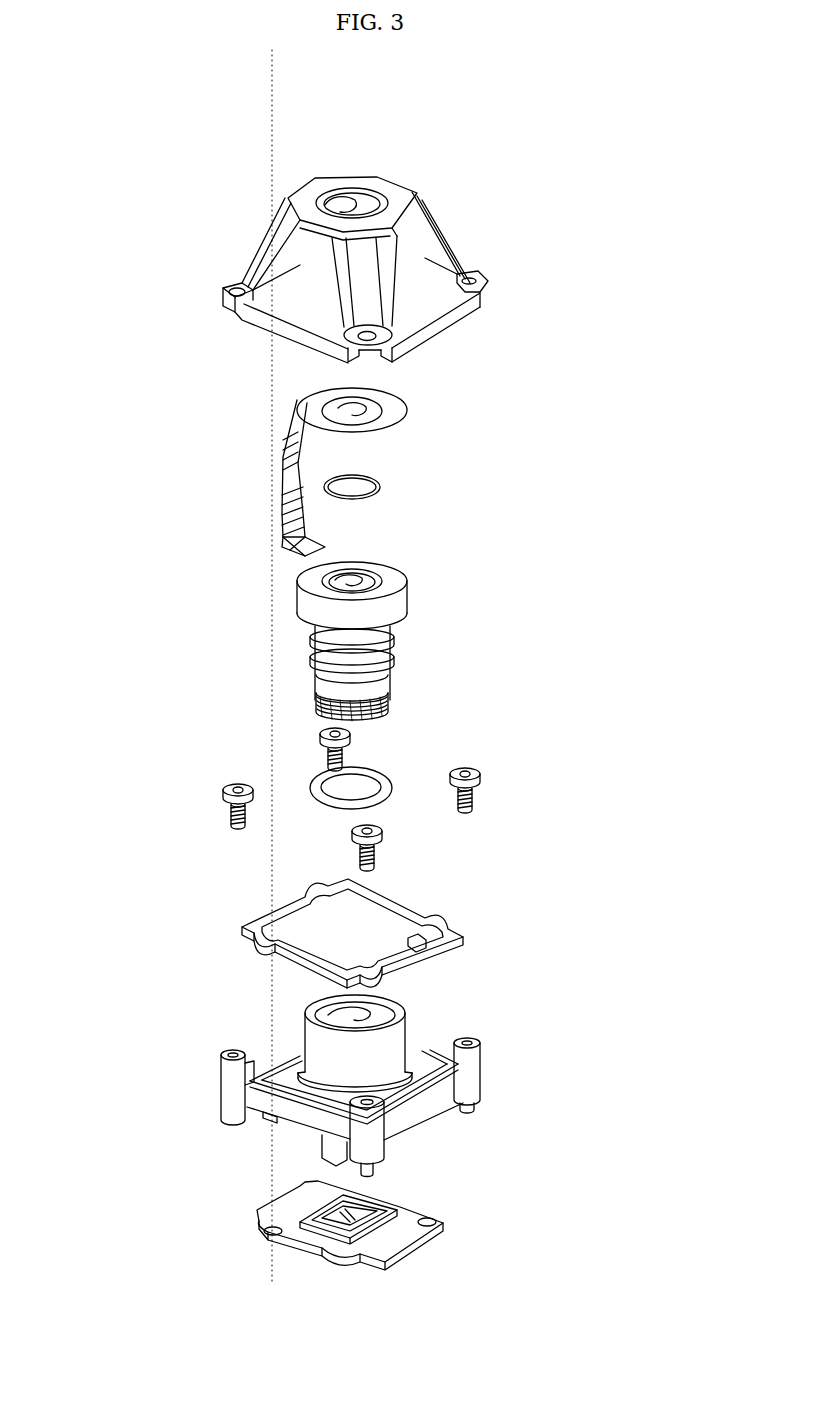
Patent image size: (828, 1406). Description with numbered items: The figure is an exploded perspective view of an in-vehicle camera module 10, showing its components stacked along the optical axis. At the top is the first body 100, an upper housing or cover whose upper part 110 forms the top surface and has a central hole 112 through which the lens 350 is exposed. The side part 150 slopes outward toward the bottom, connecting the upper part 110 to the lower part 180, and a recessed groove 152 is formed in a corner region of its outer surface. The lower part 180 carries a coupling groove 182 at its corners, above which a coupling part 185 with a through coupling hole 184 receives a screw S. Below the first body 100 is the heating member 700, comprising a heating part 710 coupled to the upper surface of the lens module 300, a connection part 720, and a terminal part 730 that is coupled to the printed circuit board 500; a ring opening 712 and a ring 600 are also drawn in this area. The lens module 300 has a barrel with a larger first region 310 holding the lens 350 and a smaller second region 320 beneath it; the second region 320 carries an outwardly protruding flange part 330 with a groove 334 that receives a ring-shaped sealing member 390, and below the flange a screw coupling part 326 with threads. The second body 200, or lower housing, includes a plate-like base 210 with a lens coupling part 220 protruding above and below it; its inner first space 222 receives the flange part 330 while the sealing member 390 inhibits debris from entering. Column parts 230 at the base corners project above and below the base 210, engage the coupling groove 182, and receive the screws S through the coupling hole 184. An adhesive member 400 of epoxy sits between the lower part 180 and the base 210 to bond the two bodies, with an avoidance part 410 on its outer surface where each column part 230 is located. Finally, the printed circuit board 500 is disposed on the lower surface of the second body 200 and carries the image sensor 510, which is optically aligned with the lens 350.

The camera module 10 is at (125, 99).
The first body 100 is at (500, 292).
The upper part 110 is at (395, 190).
The hole 112 is at (312, 190).
The side part 150 is at (425, 250).
The groove 152 is at (362, 290).
The lower part 180 is at (440, 320).
The coupling groove 182 is at (386, 356).
The coupling hole 184 is at (480, 272).
The coupling part 185 is at (225, 300).
The heating member 700 is at (186, 413).
The heating part 710 is at (302, 402).
The ring opening 712 is at (372, 412).
The connection part 720 is at (290, 468).
The terminal part 730 is at (285, 546).
The O-ring 600 is at (381, 488).
The lens module 300 is at (416, 630).
The first region 310 is at (400, 612).
The lens 350 is at (375, 574).
The flange part 330 is at (311, 647).
The groove 334 is at (395, 648).
The second region 320 is at (325, 684).
The screw coupling part 326 is at (402, 697).
The screw S is at (482, 790).
The sealing member 390 is at (385, 800).
The adhesive member 400 is at (445, 914).
The avoidance part 410 is at (240, 936).
The second body 200 is at (494, 1079).
The base 210 is at (450, 1052).
The lens coupling part 220 is at (395, 1038).
The first space 222 is at (312, 1032).
The column part 230 is at (482, 1048).
The printed circuit board 500 is at (440, 1214).
The image sensor 510 is at (305, 1208).